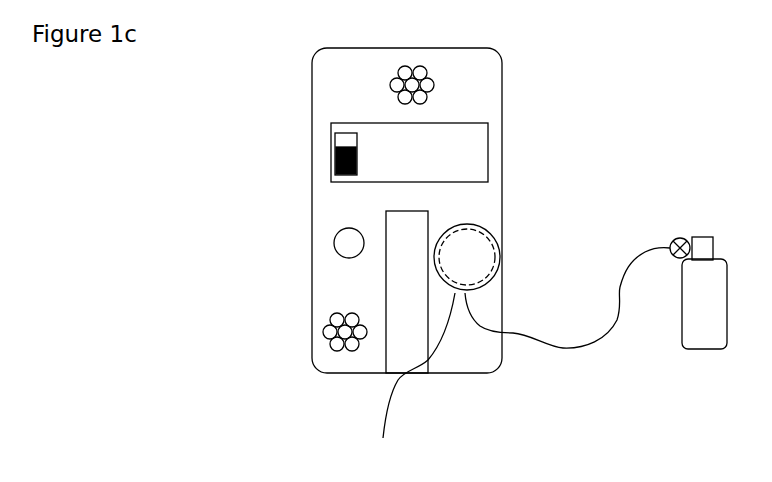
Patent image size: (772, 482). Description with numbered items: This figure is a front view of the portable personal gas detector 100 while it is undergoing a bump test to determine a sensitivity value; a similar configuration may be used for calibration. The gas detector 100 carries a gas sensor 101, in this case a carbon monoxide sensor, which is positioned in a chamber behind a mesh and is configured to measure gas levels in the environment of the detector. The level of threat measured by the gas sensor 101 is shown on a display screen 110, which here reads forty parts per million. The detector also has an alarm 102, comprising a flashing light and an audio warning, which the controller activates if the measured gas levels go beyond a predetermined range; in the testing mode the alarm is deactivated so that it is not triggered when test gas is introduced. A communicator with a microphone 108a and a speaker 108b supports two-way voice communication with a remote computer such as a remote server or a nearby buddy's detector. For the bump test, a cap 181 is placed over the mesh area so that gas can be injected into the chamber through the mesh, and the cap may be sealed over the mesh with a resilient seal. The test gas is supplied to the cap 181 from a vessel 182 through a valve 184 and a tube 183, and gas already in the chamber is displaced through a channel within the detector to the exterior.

The portable personal gas detector 100 is at (187, 210).
The gas sensor 101 is at (463, 257).
The alarm 102 is at (334, 243).
The microphone 108a is at (333, 340).
The speaker 108b is at (390, 85).
The display screen 110 is at (472, 129).
The cap 181 is at (411, 381).
The tube 183 is at (513, 333).
The valve 184 is at (675, 258).
The vessel 182 is at (708, 320).